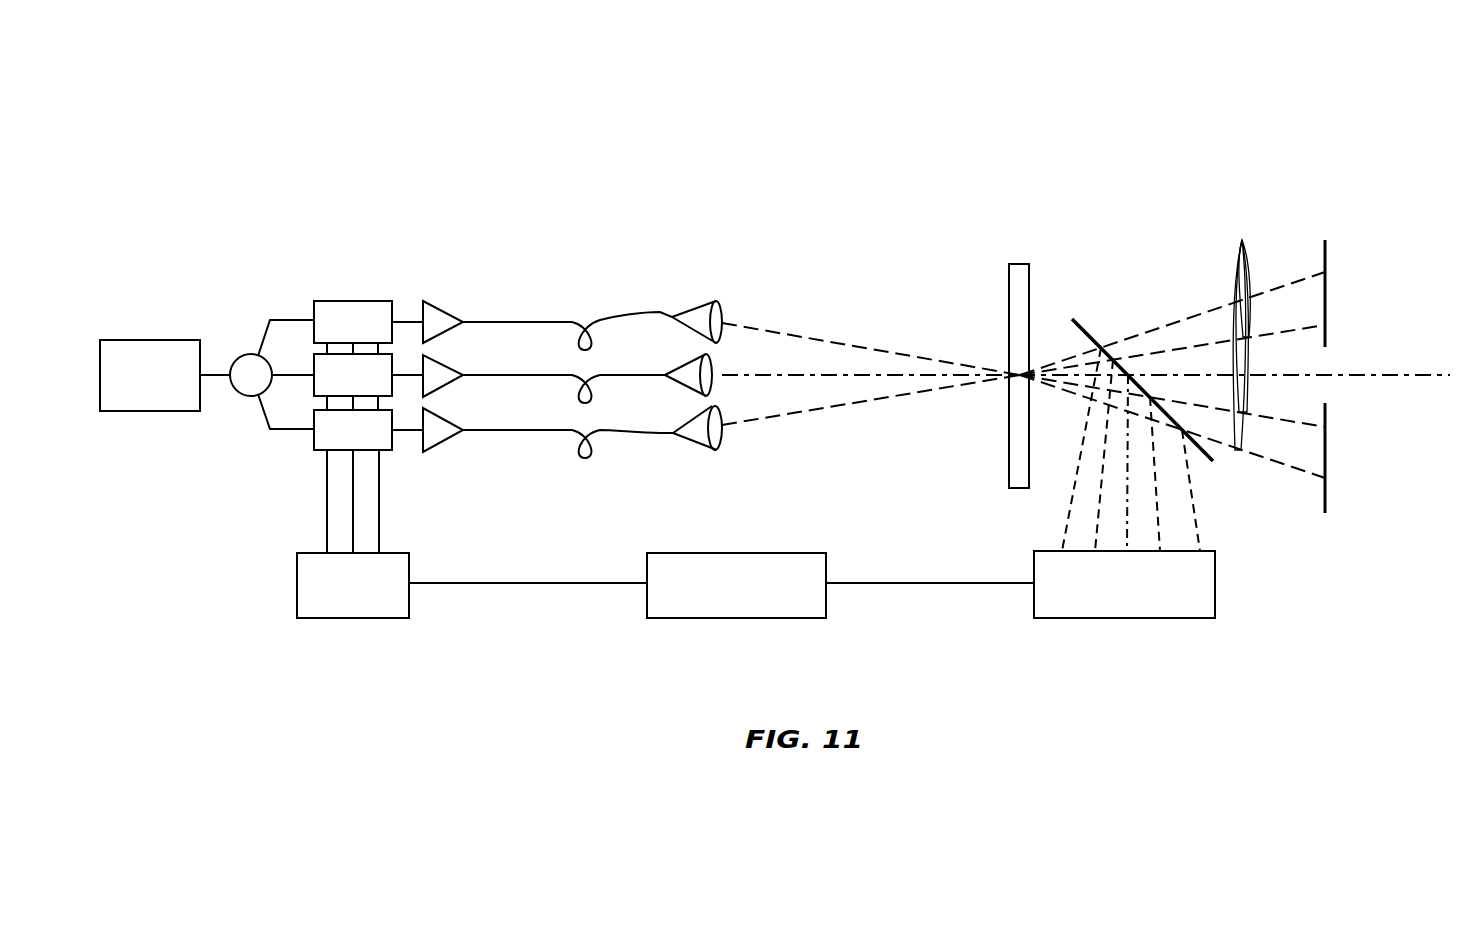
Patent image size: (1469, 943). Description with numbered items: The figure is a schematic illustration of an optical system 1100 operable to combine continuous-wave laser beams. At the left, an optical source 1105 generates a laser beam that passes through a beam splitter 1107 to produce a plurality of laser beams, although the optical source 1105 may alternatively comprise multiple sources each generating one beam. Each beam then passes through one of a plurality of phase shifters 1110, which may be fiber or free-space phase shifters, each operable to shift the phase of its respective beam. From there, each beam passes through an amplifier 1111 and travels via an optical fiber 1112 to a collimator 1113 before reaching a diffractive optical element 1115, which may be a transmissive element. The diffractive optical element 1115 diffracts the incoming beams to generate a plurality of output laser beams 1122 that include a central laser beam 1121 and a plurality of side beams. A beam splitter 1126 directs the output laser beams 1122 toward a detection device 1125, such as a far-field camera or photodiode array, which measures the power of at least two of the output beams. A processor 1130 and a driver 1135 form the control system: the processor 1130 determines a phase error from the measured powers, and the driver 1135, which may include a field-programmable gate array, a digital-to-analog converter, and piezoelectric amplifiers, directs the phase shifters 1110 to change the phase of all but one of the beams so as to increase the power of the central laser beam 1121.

The optical system 1100 is at (1247, 52).
The optical source 1105 is at (148, 340).
The beam splitter 1107 is at (251, 354).
The plurality of phase shifters 1110 is at (363, 258).
The amplifier 1111 is at (437, 262).
The optical fiber 1112 is at (573, 262).
The collimator 1113 is at (692, 260).
The diffractive optical element 1115 is at (1016, 264).
The central laser beam 1121 is at (1387, 373).
The plurality of output laser beams 1122 is at (1248, 330).
The detection device 1125 is at (1207, 551).
The beam splitter 1126 is at (1087, 334).
The processor 1130 is at (810, 553).
The driver 1135 is at (397, 553).